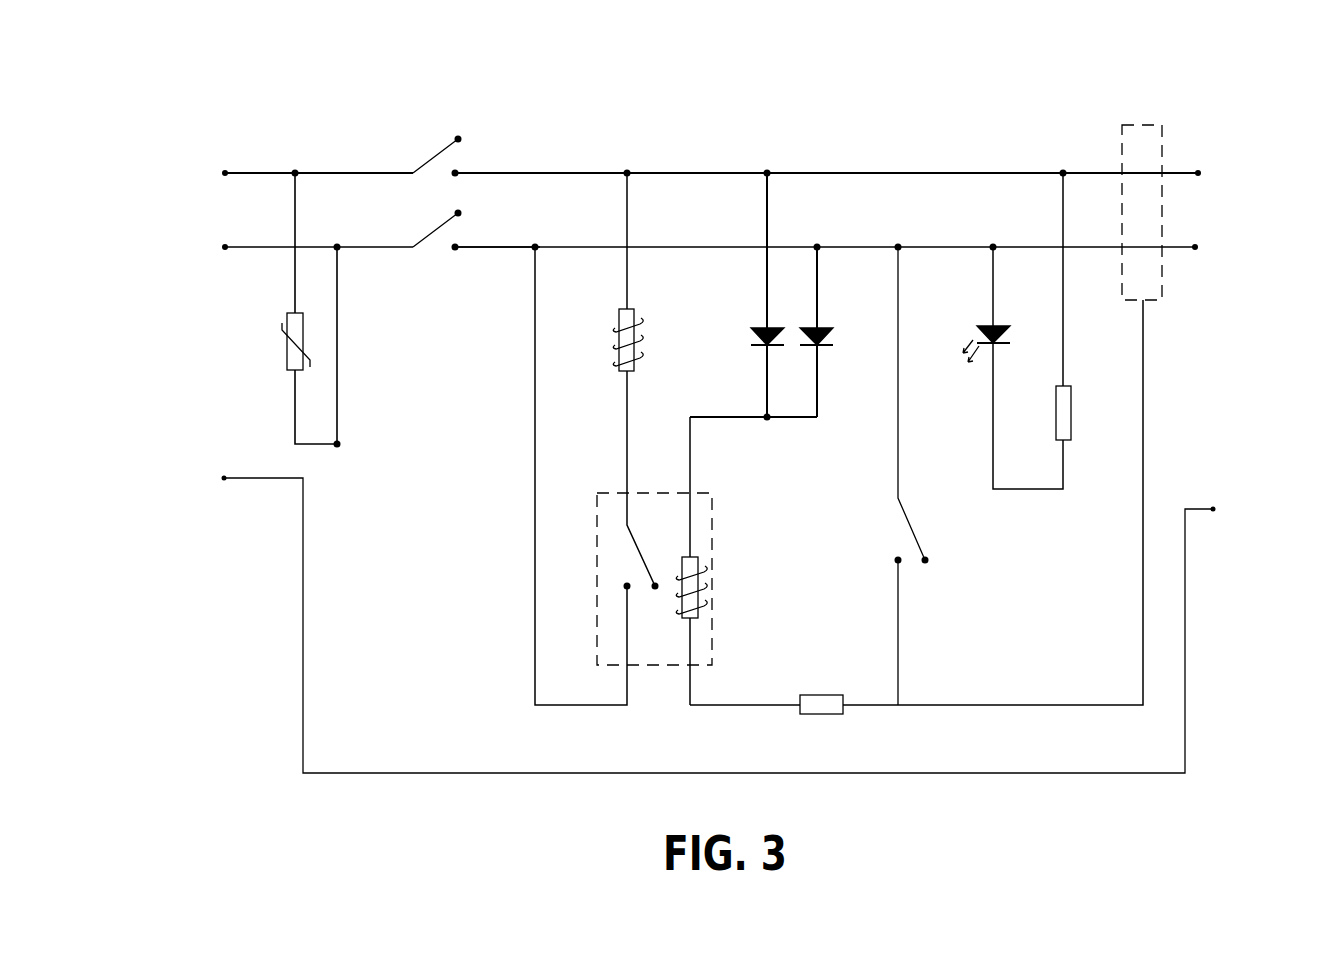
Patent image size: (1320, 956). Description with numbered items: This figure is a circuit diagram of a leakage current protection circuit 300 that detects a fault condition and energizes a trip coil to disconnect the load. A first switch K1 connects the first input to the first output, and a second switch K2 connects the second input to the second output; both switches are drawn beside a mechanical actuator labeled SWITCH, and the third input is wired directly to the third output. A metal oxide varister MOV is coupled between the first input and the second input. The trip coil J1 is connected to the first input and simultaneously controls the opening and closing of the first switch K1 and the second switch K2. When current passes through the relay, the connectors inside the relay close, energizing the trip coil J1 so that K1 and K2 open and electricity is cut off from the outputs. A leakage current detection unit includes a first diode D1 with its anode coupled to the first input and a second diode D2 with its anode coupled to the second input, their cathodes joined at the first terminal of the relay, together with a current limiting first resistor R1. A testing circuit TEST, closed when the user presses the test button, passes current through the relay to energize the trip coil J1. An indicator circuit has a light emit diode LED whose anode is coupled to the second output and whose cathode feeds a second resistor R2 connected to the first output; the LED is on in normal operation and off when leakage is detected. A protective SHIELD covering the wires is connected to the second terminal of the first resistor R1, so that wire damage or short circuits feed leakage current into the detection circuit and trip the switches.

The leakage current protection circuit 300 is at (719, 386).
The first switch K1 is at (497, 151).
The second switch K2 is at (497, 227).
The power switch SWITCH is at (417, 187).
The metal oxide varister MOV is at (286, 308).
The trip coil J1 is at (615, 379).
The element relay is at (687, 561).
The first resistor R1 is at (821, 723).
The second resistor R2 is at (1080, 421).
The first diode D1 is at (760, 295).
The second diode D2 is at (822, 332).
The testing circuit TEST is at (925, 476).
The light emit diode LED is at (999, 311).
The protective shield SHIELD is at (1161, 199).